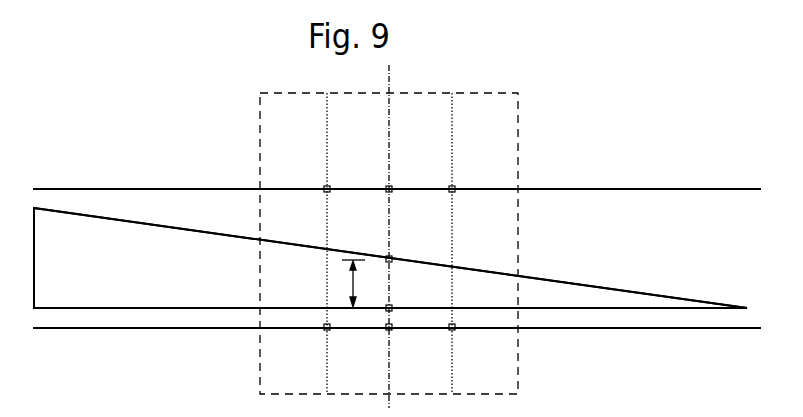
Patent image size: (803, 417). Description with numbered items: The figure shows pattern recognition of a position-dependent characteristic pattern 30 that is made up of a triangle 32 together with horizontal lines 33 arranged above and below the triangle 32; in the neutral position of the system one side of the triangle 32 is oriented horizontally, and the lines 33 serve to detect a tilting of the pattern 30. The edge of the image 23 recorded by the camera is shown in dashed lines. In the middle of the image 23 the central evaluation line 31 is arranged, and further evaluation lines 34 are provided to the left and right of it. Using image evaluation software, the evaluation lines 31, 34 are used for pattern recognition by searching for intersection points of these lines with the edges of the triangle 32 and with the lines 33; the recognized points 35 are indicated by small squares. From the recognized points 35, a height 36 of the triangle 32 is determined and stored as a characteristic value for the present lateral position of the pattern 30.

The image 23 is at (488, 92).
The characteristic pattern 30 is at (152, 163).
The central evaluation line 31 is at (392, 150).
The triangle 32 is at (573, 283).
The horizontal lines 33 is at (611, 187).
The further evaluation lines 34 is at (333, 150).
The recognized points 35 is at (322, 194).
The height 36 is at (348, 285).